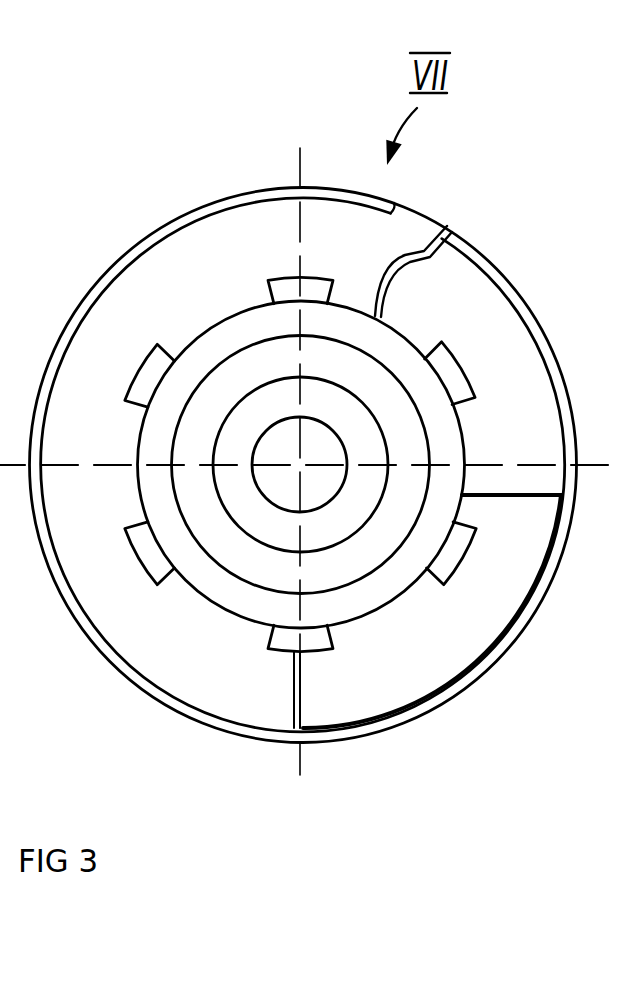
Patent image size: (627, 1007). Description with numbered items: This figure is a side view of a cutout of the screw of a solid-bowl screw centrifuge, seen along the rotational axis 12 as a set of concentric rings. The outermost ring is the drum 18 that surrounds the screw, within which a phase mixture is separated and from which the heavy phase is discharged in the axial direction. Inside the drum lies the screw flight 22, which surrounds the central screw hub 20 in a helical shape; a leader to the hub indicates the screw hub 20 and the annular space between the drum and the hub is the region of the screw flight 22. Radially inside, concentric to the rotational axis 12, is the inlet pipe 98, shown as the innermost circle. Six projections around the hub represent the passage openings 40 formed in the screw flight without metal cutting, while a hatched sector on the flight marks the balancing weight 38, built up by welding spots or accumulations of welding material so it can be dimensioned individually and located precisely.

The rotational axis 12 is at (300, 465).
The drum 18 is at (258, 186).
The screw flight 22 is at (226, 252).
The screw hub 20 is at (455, 432).
The inlet pipe 98 is at (331, 424).
The passage openings 40 is at (138, 555).
The balancing weight 38 is at (437, 662).